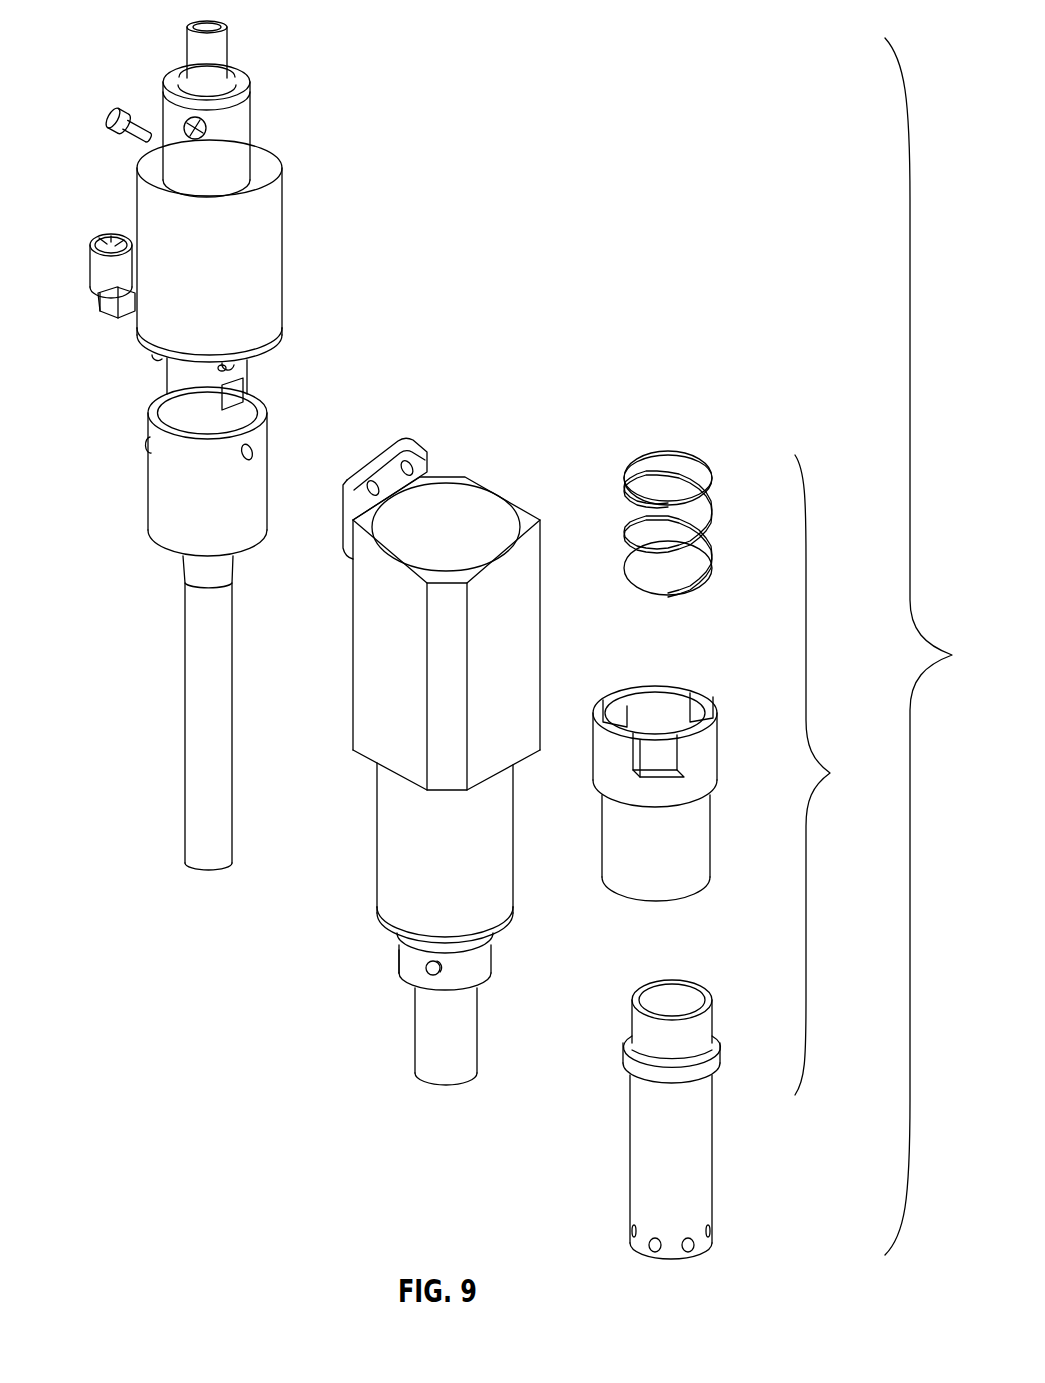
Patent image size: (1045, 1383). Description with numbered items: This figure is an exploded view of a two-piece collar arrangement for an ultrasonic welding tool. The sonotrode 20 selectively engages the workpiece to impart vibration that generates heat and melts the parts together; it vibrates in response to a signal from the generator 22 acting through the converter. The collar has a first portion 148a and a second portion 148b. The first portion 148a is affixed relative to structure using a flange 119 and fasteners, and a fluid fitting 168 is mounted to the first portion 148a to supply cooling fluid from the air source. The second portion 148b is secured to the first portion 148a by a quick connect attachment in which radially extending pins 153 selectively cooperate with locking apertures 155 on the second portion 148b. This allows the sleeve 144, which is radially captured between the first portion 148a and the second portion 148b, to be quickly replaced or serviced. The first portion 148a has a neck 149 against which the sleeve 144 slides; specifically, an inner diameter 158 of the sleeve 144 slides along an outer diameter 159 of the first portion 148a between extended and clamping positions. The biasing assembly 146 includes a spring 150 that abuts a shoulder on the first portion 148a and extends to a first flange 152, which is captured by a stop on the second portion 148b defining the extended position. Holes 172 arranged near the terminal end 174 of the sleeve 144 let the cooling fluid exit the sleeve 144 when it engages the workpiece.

The generator 22 is at (258, 276).
The fluid fitting 168 is at (105, 272).
The sonotrode 20 is at (250, 478).
The first portion 148a is at (363, 695).
The flange 119 is at (418, 467).
The radially extending pins 153 is at (422, 975).
The outer diameter 159 is at (472, 1005).
The neck 149 is at (427, 1055).
The spring 150 is at (663, 450).
The second portion 148b is at (620, 793).
The locking apertures 155 is at (643, 767).
The inner diameter 158 is at (677, 1002).
The first flange 152 is at (713, 1057).
The sleeve 144 is at (678, 1121).
The holes 172 is at (653, 1253).
The terminal end 174 is at (702, 1250).
The biasing assembly 146 is at (836, 775).